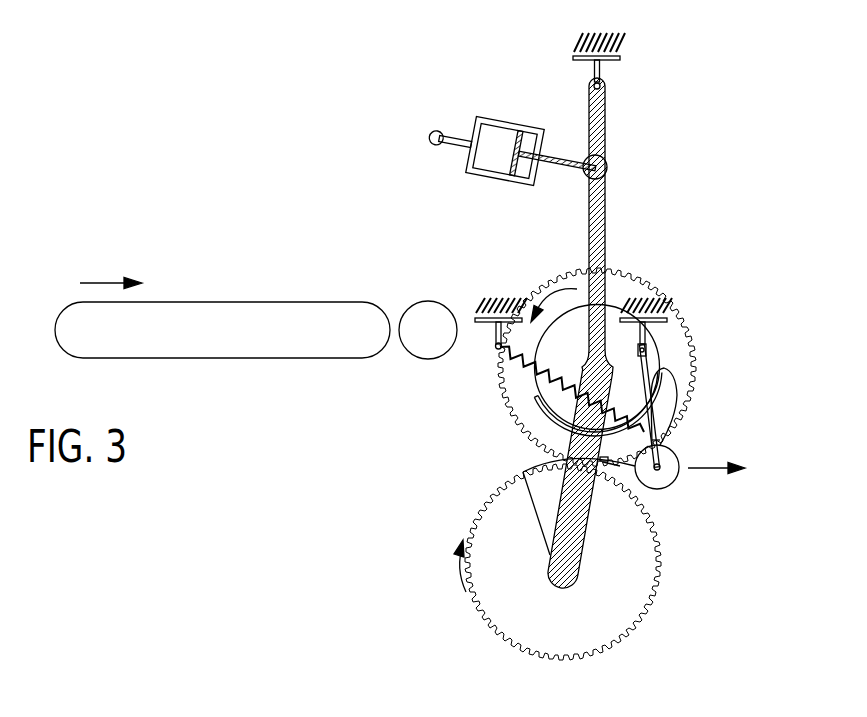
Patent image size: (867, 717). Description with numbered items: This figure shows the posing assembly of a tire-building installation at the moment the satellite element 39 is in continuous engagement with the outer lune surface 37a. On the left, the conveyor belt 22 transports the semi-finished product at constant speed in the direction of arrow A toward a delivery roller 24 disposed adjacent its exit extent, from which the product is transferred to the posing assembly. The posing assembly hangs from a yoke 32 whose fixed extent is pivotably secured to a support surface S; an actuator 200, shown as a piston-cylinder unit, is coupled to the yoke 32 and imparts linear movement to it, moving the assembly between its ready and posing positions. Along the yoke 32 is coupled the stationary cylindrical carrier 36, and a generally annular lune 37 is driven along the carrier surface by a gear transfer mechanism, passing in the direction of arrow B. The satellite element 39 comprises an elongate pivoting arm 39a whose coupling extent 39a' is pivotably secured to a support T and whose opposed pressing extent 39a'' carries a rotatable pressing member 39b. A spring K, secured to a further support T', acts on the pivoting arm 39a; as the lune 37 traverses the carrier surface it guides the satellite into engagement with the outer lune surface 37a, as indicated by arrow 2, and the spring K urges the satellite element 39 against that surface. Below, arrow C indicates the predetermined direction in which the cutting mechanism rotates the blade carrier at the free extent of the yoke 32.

The conveyor belt 22 is at (203, 302).
The delivery roller 24 is at (418, 338).
The actuator 200 is at (497, 118).
The yoke 32 is at (602, 187).
The cylindrical carrier 36 is at (660, 340).
The lune 37 is at (675, 397).
The outer lune surface 37a is at (613, 464).
The satellite element 39 is at (679, 469).
The pivoting arm 39a is at (696, 405).
The coupling extent 39a' is at (702, 339).
The pressing extent 39a'' is at (702, 431).
The pressing member 39b is at (667, 487).
The arrow 2 is at (716, 459).
The support surface S is at (620, 43).
The support T is at (646, 282).
The support T' is at (488, 282).
The spring K is at (530, 367).
The arrow A is at (111, 274).
The arrow B is at (554, 301).
The arrow C is at (454, 566).